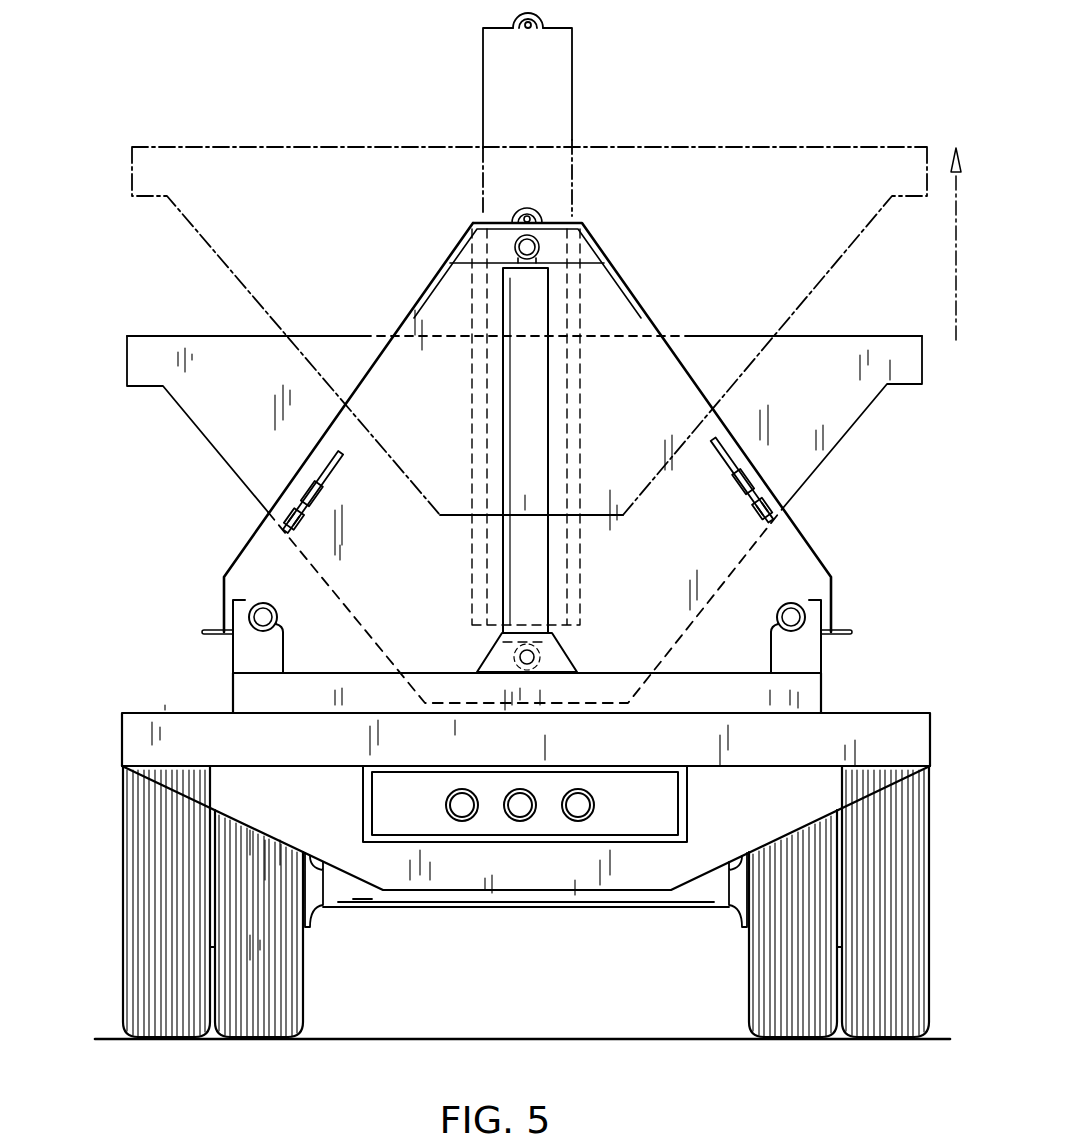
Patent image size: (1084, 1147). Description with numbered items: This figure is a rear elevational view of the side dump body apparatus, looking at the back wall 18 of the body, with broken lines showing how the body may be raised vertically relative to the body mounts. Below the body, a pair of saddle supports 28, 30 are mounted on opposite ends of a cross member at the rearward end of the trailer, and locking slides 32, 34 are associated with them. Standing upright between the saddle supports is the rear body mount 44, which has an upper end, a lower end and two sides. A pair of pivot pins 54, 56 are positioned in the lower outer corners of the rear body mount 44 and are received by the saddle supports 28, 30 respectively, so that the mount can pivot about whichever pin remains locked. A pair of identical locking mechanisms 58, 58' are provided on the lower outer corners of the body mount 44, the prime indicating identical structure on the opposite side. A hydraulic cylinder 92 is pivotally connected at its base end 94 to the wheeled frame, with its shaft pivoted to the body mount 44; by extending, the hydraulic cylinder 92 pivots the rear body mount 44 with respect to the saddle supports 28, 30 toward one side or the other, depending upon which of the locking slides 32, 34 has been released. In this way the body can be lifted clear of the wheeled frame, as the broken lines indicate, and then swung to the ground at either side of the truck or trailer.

The back wall 18 is at (806, 382).
The saddle support 28 is at (803, 643).
The saddle support 30 is at (260, 650).
The locking slide 32 is at (777, 612).
The locking slide 34 is at (282, 617).
The rear body mount 44 is at (651, 318).
The pivot pin 54 is at (796, 604).
The pivot pin 56 is at (258, 604).
The locking mechanism 58 is at (256, 491).
The locking mechanism 58' is at (802, 480).
The hydraulic cylinder 92 is at (530, 448).
The base end 94 is at (540, 660).